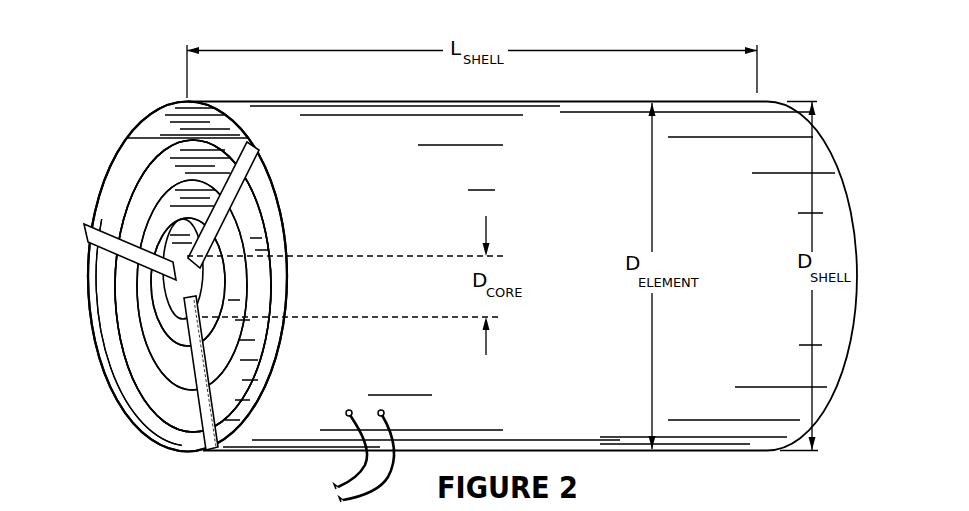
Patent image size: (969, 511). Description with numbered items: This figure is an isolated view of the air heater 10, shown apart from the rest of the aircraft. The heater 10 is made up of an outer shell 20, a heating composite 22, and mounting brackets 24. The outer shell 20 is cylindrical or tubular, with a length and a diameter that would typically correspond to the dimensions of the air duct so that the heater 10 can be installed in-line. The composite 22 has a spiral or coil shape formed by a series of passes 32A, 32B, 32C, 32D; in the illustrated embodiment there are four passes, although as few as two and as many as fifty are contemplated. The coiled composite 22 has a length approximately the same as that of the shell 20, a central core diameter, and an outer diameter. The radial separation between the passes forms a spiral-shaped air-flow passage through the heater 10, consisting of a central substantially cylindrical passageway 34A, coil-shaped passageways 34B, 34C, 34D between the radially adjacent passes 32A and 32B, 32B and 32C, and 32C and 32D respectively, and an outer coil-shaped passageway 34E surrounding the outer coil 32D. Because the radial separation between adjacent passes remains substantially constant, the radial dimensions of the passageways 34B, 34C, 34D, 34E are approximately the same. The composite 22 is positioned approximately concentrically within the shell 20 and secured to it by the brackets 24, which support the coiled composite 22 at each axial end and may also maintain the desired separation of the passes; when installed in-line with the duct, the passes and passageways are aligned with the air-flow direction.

The air heater 10 is at (147, 107).
The outer shell 20 is at (380, 152).
The heating composite 22 is at (222, 150).
The mounting brackets 24 is at (261, 148).
The coil pass 32A is at (205, 292).
The coil pass 32B is at (225, 289).
The coil pass 32C is at (247, 277).
The outer coil pass 32D is at (272, 263).
The central cylindrical passageway 34A is at (173, 333).
The coil-shaped passageway 34B is at (177, 373).
The coil-shaped passageway 34C is at (177, 407).
The coil-shaped passageway 34D is at (180, 438).
The outer coil-shaped passageway 34E is at (192, 444).